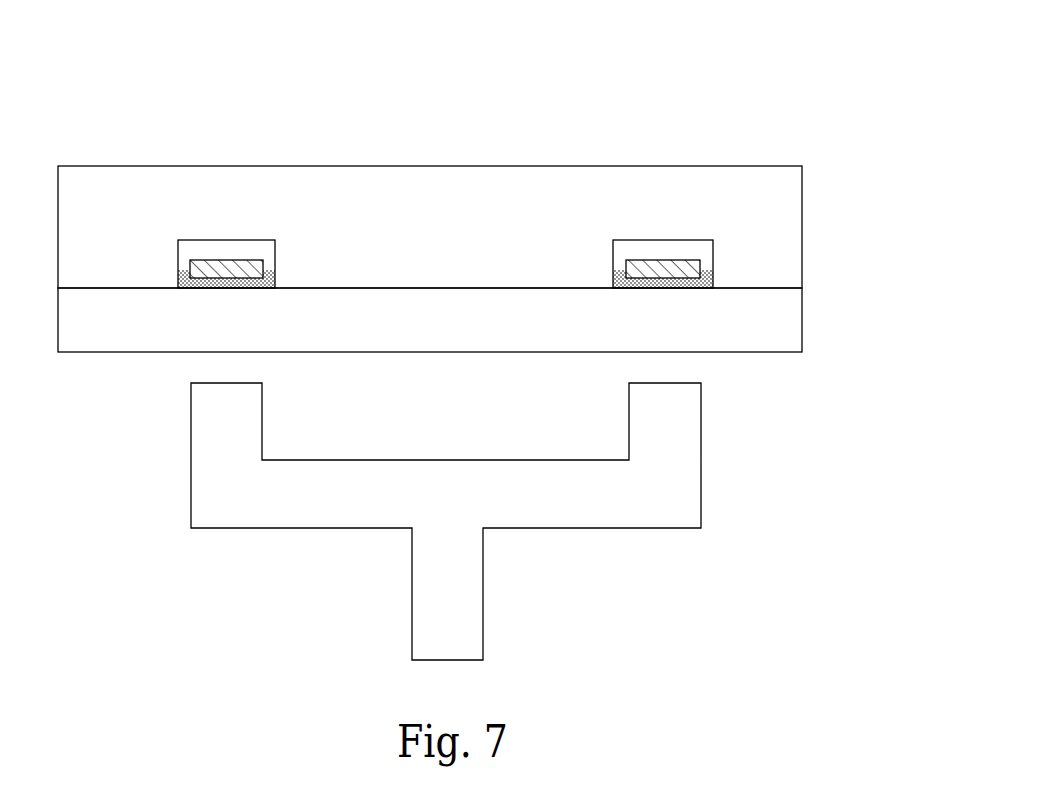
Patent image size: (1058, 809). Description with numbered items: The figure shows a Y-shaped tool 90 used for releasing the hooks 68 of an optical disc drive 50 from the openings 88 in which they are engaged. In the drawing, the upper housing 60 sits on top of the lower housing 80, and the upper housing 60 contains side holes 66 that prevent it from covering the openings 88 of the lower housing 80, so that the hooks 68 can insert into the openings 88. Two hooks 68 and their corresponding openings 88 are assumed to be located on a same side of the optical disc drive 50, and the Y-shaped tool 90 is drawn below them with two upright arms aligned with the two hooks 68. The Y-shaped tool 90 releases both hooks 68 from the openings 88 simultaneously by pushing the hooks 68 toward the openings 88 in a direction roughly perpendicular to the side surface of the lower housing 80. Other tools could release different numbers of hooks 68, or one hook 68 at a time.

The optical disc drive 50 is at (590, 78).
The upper housing 60 is at (782, 193).
The side hole 66 is at (267, 248).
The hook 68 is at (238, 260).
The lower housing 80 is at (772, 318).
The opening 88 is at (275, 277).
The Y-shaped tool 90 is at (687, 479).